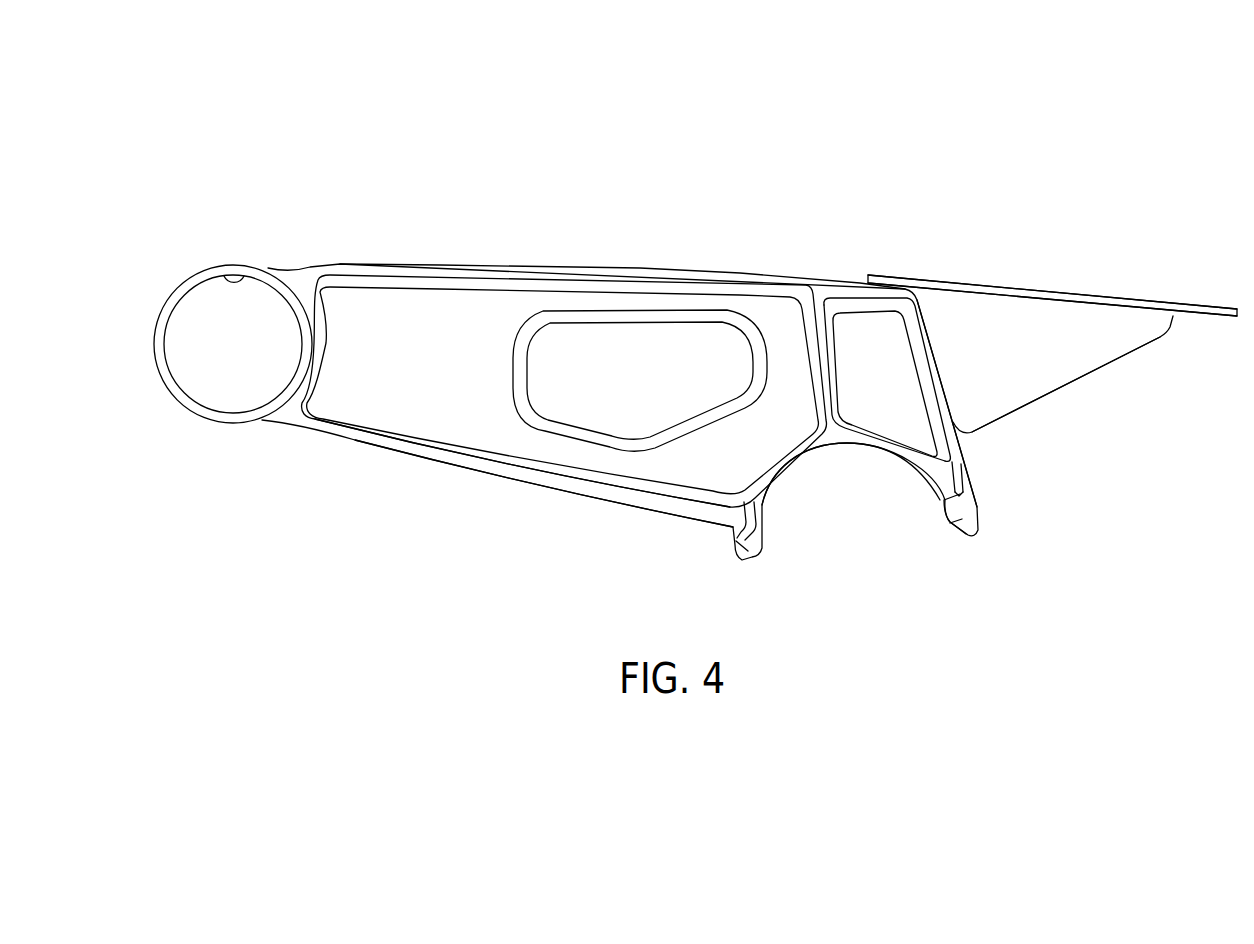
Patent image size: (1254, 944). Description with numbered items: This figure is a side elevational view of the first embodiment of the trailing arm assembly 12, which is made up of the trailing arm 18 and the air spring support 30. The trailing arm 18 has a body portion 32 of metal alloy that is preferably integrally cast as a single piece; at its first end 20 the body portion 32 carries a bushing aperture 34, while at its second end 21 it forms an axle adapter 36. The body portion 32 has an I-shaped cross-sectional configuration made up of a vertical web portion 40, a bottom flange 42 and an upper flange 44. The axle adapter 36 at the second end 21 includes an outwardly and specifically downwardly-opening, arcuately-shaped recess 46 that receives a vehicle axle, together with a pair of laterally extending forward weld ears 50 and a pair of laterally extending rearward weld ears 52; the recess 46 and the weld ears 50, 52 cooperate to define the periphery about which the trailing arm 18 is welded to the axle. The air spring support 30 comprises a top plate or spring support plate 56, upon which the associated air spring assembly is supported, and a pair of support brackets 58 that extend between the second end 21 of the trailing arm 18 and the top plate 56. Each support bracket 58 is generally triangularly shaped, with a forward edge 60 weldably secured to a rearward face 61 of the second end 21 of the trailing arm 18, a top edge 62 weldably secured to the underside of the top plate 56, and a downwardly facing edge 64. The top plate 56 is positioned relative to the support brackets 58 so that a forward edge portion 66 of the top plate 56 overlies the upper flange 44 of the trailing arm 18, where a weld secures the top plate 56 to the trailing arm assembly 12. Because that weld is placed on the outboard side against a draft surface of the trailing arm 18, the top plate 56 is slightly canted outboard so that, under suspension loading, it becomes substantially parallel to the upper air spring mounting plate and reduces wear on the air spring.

The trailing arm assembly 12 is at (684, 166).
The trailing arm 18 is at (614, 254).
The first end 20 is at (316, 446).
The second end 21 is at (690, 520).
The air spring support 30 is at (1055, 268).
The body portion 32 is at (528, 268).
The bushing aperture 34 is at (246, 282).
The axle adapter 36 is at (793, 458).
The vertical web portion 40 is at (453, 393).
The bottom flange 42 is at (530, 477).
The upper flange 44 is at (425, 272).
The arcuately-shaped recess 46 is at (922, 462).
The forward weld ears 50 is at (748, 560).
The rearward weld ears 52 is at (952, 527).
The top plate 56 is at (1100, 292).
The support brackets 58 is at (1053, 368).
The forward edge 60 is at (937, 360).
The rearward face 61 is at (948, 383).
The top edge 62 is at (1018, 282).
The downwardly facing edge 64 is at (1118, 357).
The forward edge portion 66 is at (906, 290).